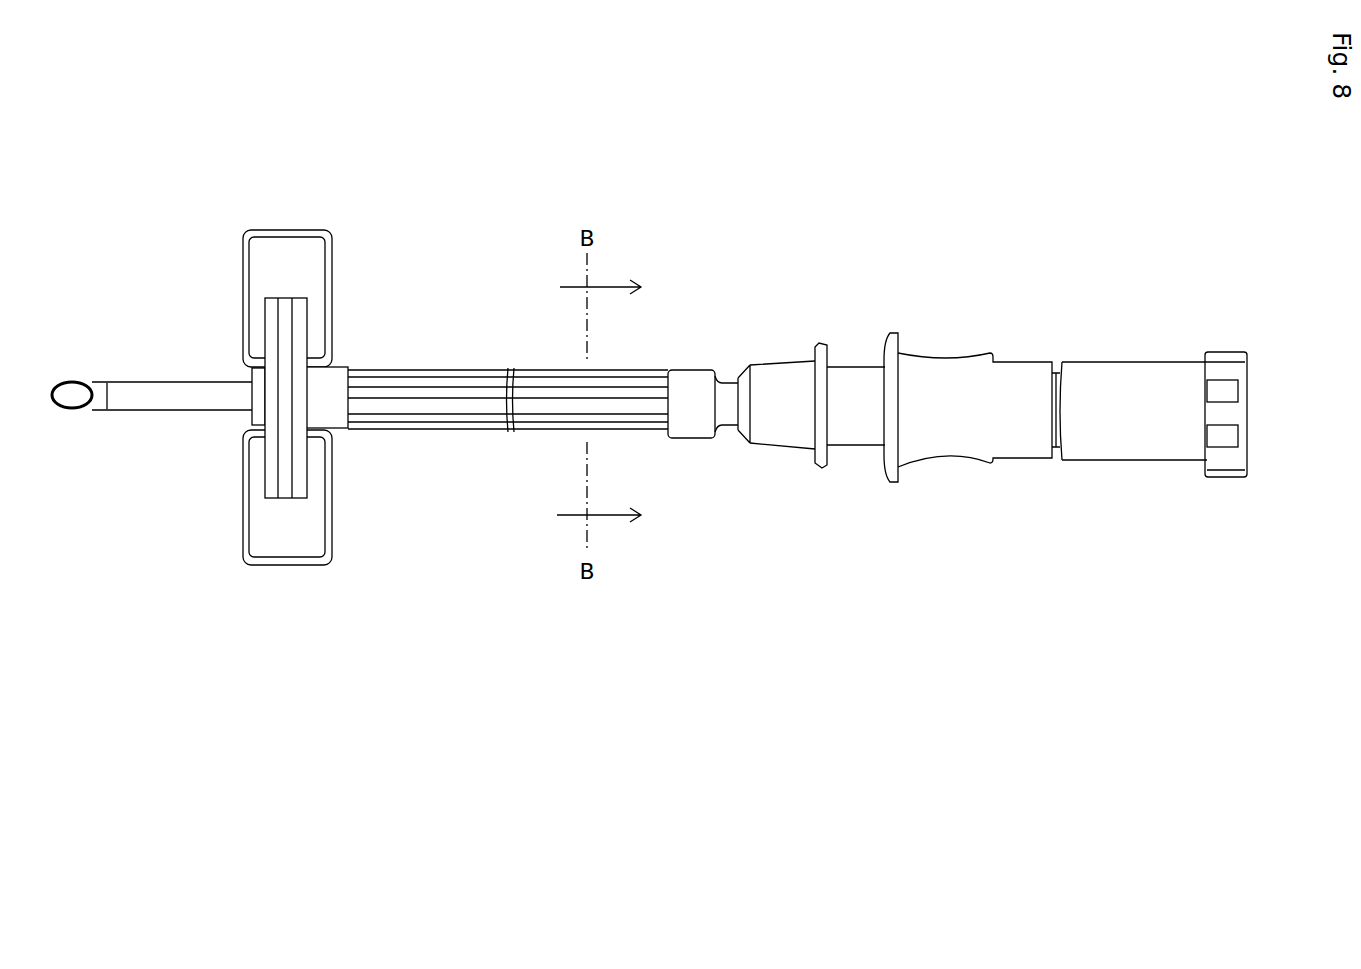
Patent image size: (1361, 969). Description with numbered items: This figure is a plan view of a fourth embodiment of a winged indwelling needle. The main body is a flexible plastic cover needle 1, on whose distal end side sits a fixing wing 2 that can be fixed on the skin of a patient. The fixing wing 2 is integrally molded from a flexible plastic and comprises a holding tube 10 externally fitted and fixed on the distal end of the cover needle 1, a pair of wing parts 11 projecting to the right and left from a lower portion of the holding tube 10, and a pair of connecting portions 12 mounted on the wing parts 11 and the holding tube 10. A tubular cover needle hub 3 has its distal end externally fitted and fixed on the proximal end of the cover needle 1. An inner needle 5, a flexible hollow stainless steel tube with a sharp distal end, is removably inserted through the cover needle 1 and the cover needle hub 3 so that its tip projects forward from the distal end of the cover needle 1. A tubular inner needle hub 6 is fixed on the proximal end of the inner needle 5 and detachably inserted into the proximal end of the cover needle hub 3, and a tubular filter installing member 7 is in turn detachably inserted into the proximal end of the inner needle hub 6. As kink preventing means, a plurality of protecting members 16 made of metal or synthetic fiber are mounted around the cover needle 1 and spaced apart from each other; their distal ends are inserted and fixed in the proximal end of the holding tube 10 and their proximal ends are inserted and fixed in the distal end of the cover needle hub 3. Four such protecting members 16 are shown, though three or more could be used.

The cover needle 1 is at (135, 381).
The fixing wing 2 is at (289, 384).
The cover needle hub 3 is at (767, 364).
The inner needle 5 is at (73, 382).
The inner needle hub 6 is at (1017, 360).
The filter installing member 7 is at (1125, 362).
The holding tube 10 is at (338, 367).
The wing parts 11 is at (245, 252).
The connecting portions 12 is at (266, 320).
The protecting members 16 is at (473, 402).